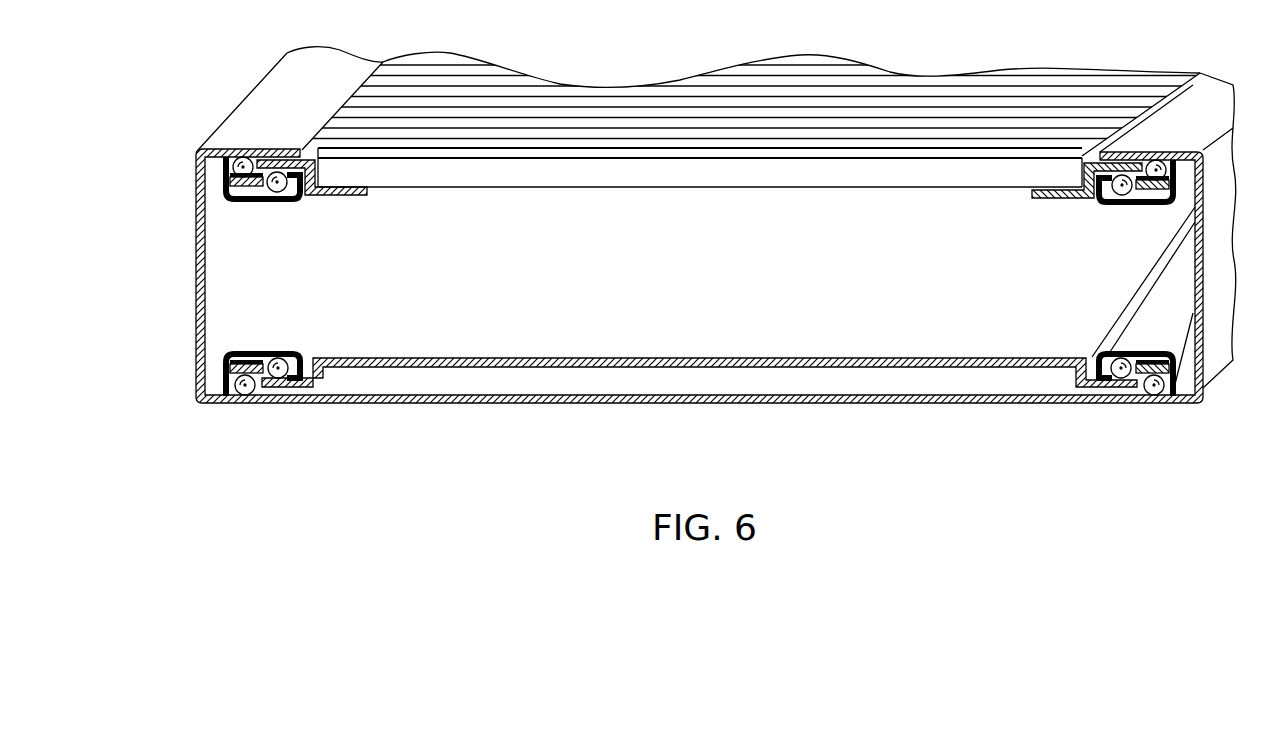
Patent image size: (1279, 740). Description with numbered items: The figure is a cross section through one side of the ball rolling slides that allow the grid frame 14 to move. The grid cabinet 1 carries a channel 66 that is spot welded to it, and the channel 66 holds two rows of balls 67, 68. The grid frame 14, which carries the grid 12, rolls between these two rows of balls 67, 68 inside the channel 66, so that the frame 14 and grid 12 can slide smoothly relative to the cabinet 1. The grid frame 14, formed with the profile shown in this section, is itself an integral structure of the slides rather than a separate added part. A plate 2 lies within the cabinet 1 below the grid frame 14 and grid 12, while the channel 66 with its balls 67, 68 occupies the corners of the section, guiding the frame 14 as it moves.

The grid cabinet 1 is at (630, 405).
The inner support plate 2 is at (810, 367).
The grid 12 is at (715, 178).
The grid frame 14 is at (337, 193).
The channel 66 is at (227, 358).
The balls 67 is at (242, 392).
The balls 68 is at (287, 383).